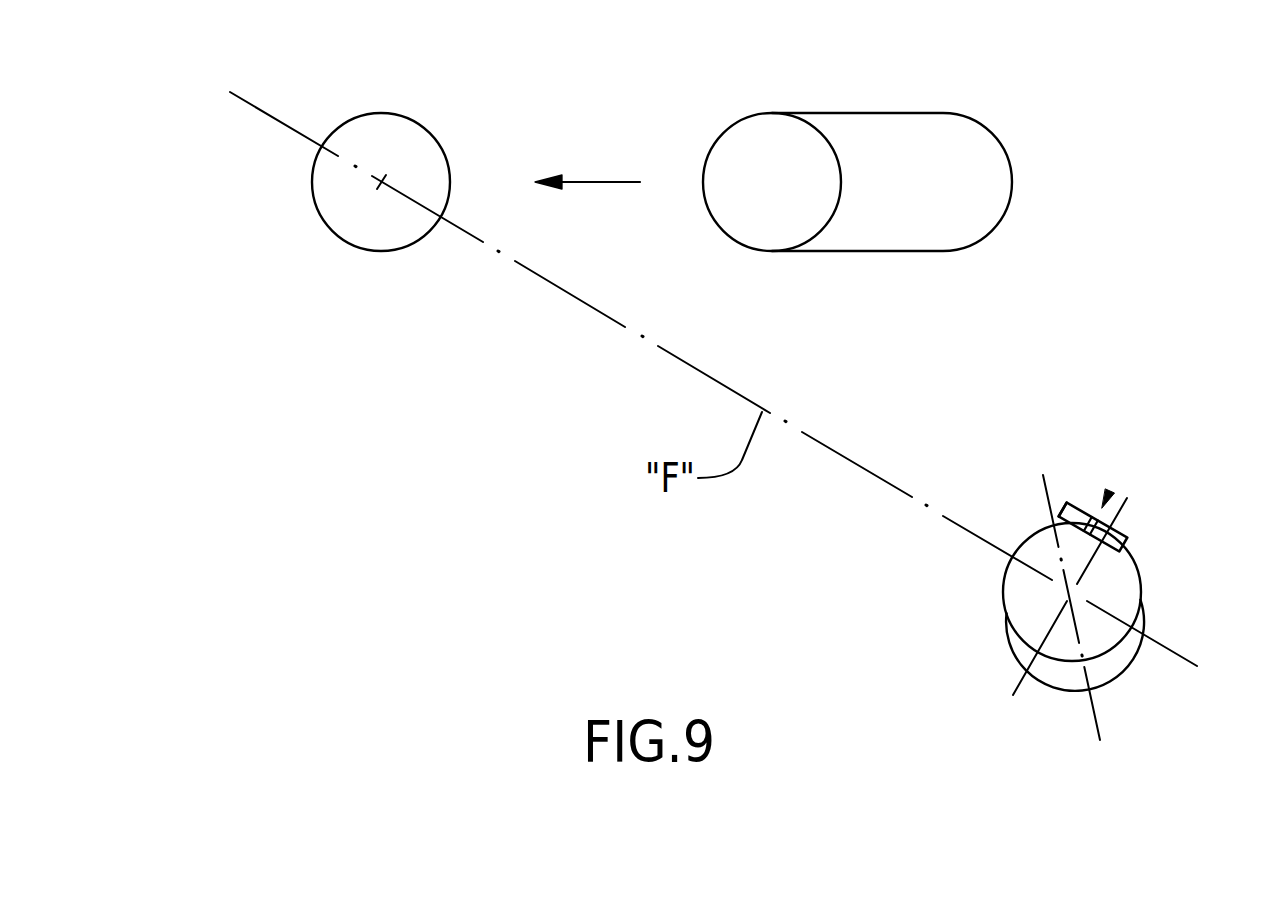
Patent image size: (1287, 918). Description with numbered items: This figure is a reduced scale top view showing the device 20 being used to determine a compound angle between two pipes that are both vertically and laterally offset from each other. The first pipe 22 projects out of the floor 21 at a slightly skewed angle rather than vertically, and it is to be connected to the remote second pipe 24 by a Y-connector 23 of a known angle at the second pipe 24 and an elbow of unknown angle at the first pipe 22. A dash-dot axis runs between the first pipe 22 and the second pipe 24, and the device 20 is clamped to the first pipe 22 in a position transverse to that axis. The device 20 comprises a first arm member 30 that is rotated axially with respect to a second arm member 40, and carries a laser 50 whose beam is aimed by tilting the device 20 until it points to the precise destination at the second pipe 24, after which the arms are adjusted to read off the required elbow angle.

The device 20 is at (1110, 491).
The floor 21 is at (1070, 607).
The first pipe 22 is at (1120, 570).
The Y-connector 23 is at (895, 125).
The second pipe 24 is at (362, 130).
The first arm member 30 is at (1115, 537).
The second arm member 40 is at (1070, 502).
The laser 50 is at (1060, 508).